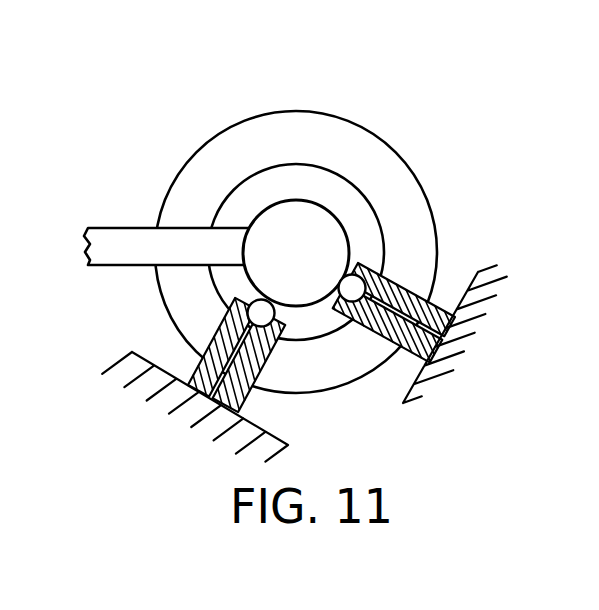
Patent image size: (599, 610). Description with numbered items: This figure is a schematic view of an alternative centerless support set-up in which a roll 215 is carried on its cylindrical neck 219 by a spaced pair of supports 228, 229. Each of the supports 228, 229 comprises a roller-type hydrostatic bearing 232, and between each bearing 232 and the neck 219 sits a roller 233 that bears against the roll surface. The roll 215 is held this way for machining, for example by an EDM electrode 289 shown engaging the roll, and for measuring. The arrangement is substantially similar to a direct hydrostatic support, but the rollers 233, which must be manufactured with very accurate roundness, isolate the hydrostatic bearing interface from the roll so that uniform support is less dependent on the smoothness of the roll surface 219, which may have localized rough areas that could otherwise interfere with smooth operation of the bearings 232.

The roll 215 is at (347, 105).
The cylindrical neck 219 is at (296, 198).
The support 228 is at (372, 338).
The support 229 is at (280, 357).
The roller-type hydrostatic bearing 232 is at (428, 300).
The roller 233 is at (356, 272).
The EDM electrode 289 is at (128, 240).